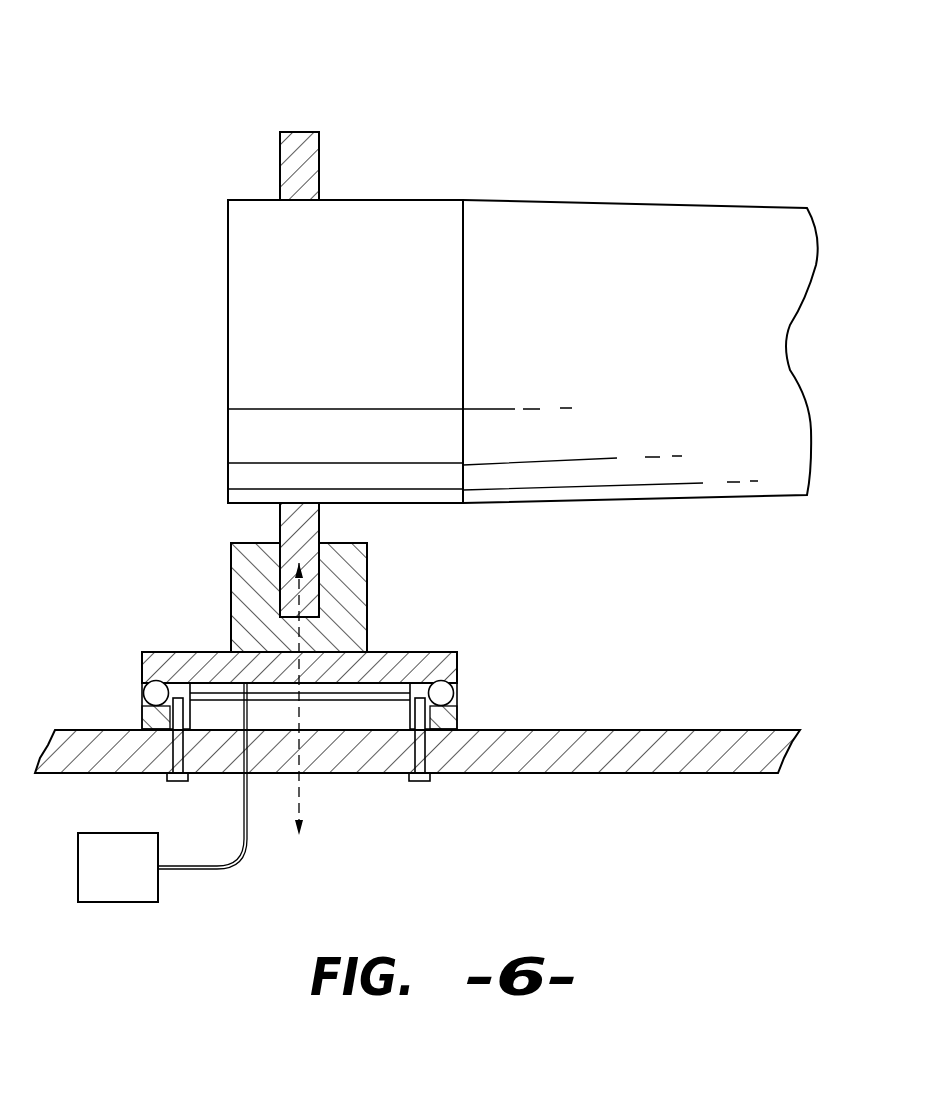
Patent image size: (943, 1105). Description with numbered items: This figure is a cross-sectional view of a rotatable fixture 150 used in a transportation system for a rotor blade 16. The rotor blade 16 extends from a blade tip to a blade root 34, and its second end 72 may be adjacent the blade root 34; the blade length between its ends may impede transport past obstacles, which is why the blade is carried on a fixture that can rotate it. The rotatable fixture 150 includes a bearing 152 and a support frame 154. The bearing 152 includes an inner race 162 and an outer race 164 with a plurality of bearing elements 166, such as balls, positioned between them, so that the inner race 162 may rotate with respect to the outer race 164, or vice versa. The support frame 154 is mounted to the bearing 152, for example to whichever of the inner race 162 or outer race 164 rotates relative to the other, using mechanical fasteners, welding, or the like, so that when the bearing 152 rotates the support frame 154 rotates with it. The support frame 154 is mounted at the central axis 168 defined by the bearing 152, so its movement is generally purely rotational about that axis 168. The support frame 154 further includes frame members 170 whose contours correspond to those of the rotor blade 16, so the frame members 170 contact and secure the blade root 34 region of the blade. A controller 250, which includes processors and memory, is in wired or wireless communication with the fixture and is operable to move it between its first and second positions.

The rotor blade 16 is at (638, 182).
The blade root 34 is at (370, 230).
The second end 72 is at (228, 293).
The rotatable fixture 150 is at (168, 150).
The bearing 152 is at (120, 685).
The support frame 154 is at (205, 552).
The inner race 162 is at (457, 662).
The outer race 164 is at (457, 718).
The bearing elements 166 is at (457, 690).
The central axis 168 is at (303, 790).
The frame members 170 is at (290, 165).
The controller 250 is at (141, 886).